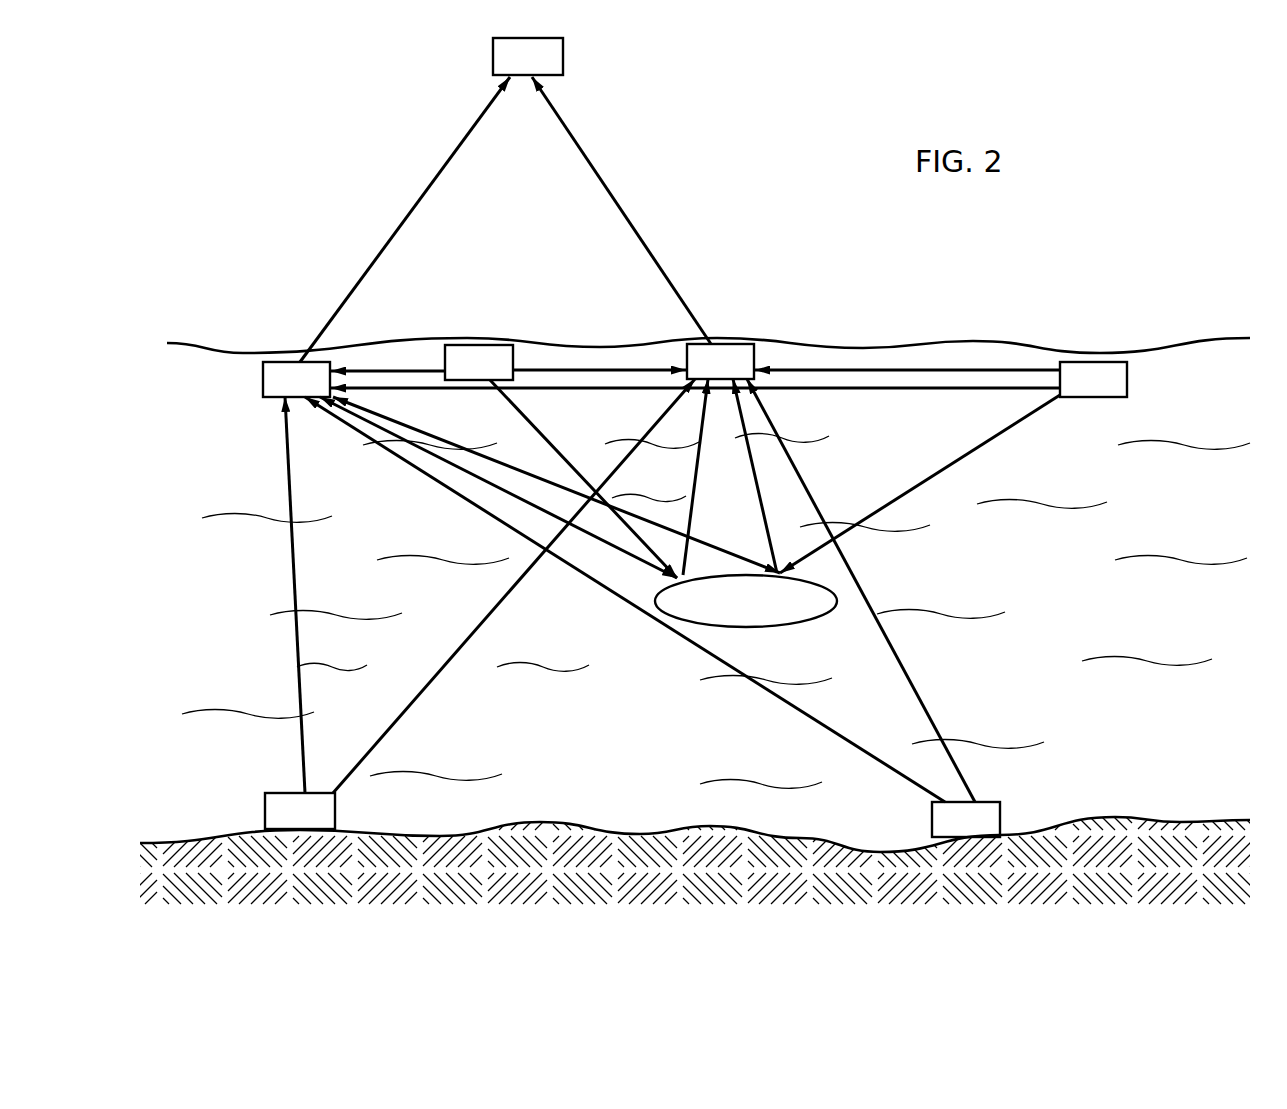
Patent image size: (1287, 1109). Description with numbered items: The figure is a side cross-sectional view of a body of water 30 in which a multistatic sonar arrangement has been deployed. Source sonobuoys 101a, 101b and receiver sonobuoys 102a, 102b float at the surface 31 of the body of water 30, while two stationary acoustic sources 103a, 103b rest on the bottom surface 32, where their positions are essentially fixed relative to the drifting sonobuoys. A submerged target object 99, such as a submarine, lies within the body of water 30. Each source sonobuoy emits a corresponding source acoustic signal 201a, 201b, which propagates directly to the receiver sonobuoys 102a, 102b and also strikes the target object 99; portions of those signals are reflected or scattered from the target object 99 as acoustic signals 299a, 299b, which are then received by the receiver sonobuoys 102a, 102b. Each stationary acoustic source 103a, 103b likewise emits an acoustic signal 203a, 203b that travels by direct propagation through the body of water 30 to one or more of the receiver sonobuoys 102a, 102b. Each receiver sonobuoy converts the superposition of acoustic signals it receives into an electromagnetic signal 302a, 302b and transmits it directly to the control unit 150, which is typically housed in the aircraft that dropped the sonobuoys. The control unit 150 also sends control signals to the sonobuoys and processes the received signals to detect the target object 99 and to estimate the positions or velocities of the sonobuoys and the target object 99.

The control unit 150 is at (508, 69).
The receiver sonobuoy 102a is at (323, 392).
The receiver sonobuoy 102b is at (747, 374).
The source sonobuoy 101a is at (506, 375).
The source sonobuoy 101b is at (1120, 392).
The stationary acoustic source 103a is at (273, 824).
The stationary acoustic source 103b is at (939, 832).
The target object 99 is at (732, 614).
The body of water 30 is at (238, 631).
The surface 31 is at (1155, 350).
The bottom surface 32 is at (1115, 815).
The electromagnetic signal 302a is at (389, 241).
The electromagnetic signal 302b is at (641, 238).
The source acoustic signal 201a is at (546, 445).
The source acoustic signal 201b is at (973, 447).
The reflected or scattered acoustic signal 299a is at (689, 470).
The reflected or scattered acoustic signal 299b is at (714, 547).
The acoustic signal 203a is at (298, 672).
The acoustic signal 203b is at (826, 722).